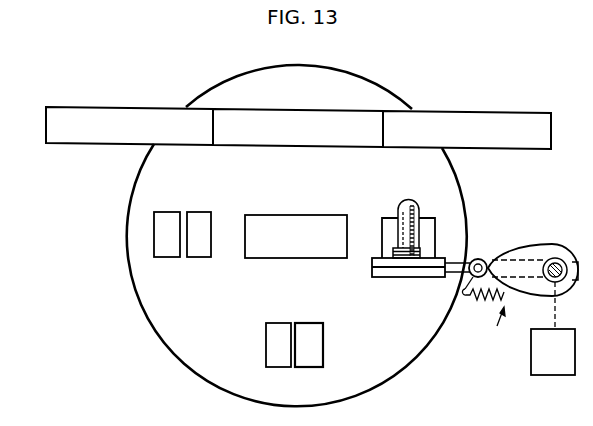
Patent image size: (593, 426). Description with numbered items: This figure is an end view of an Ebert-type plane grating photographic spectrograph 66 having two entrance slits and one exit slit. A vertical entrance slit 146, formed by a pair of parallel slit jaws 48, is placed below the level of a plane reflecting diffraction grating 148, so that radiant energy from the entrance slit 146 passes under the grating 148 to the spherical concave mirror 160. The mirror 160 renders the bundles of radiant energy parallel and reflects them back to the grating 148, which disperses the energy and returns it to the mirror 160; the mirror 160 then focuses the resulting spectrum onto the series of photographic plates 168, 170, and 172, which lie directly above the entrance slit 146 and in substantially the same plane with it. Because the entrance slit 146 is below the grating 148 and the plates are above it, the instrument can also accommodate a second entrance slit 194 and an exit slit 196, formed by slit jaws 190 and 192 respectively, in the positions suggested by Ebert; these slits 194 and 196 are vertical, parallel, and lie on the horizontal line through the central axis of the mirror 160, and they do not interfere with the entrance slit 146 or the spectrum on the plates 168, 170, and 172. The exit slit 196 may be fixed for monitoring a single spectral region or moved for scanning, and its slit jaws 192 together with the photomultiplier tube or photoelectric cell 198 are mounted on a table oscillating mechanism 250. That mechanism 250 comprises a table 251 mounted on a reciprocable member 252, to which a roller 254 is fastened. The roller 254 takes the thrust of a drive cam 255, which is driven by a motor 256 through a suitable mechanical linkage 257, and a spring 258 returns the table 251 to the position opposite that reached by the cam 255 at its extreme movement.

The spectrograph 66 is at (221, 75).
The photographic plate 168 is at (119, 114).
The photographic plate 170 is at (294, 118).
The photographic plate 172 is at (457, 121).
The slit jaws 190 is at (168, 221).
The entrance slit 194 is at (183, 216).
The plane reflecting type diffraction grating 148 is at (294, 222).
The slit jaws 48 is at (279, 357).
The entrance slit 146 is at (293, 366).
The spherical concave mirror 160 is at (433, 224).
The slit jaws 192 is at (428, 240).
The photo multiplier tube or photoelectric cell 198 is at (414, 207).
The exit slit 196 is at (400, 226).
The table 251 is at (448, 277).
The roller 254 is at (482, 258).
The drive cam 255 is at (533, 250).
The reciprocable member 252 is at (575, 260).
The spring 258 is at (473, 288).
The table oscillating mechanism 250 is at (496, 326).
The mechanical linkage 257 is at (552, 314).
The motor 256 is at (531, 359).